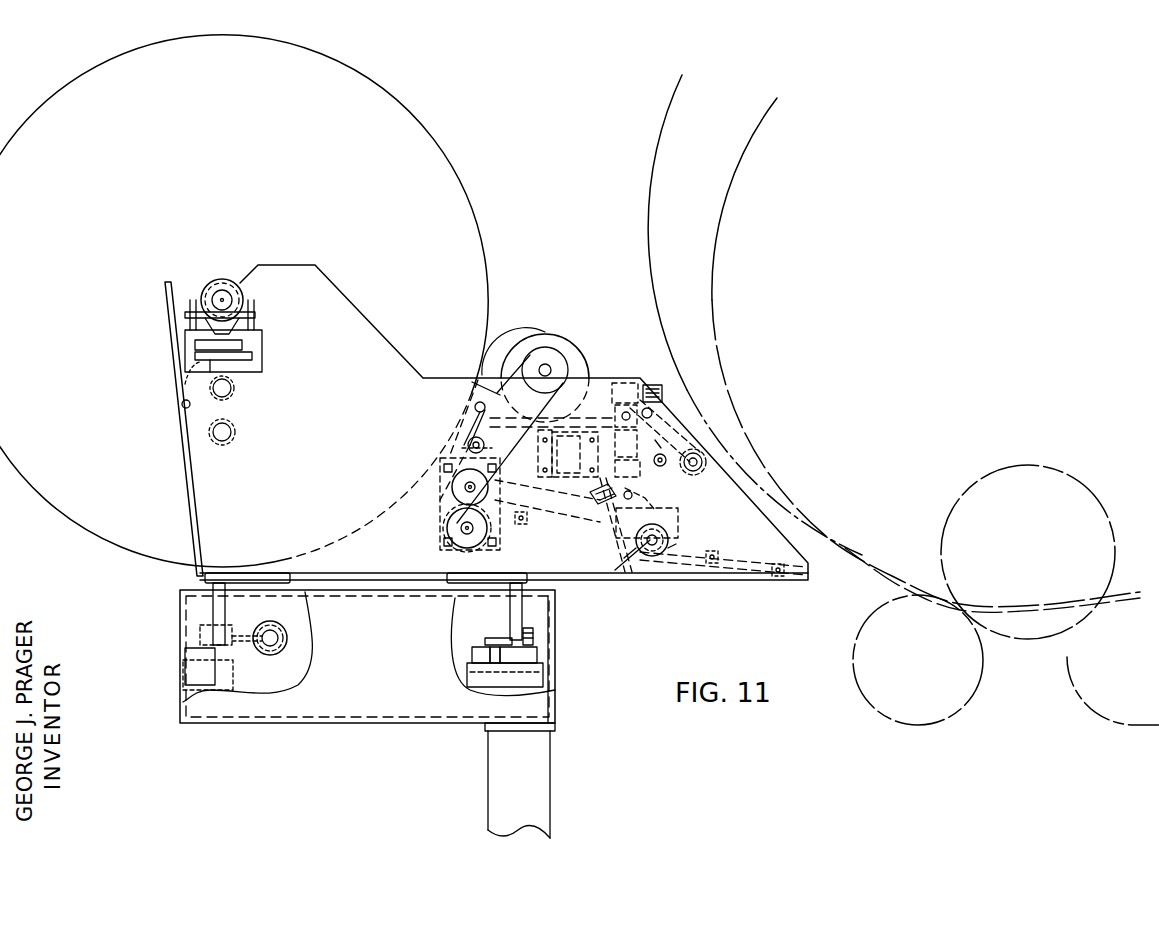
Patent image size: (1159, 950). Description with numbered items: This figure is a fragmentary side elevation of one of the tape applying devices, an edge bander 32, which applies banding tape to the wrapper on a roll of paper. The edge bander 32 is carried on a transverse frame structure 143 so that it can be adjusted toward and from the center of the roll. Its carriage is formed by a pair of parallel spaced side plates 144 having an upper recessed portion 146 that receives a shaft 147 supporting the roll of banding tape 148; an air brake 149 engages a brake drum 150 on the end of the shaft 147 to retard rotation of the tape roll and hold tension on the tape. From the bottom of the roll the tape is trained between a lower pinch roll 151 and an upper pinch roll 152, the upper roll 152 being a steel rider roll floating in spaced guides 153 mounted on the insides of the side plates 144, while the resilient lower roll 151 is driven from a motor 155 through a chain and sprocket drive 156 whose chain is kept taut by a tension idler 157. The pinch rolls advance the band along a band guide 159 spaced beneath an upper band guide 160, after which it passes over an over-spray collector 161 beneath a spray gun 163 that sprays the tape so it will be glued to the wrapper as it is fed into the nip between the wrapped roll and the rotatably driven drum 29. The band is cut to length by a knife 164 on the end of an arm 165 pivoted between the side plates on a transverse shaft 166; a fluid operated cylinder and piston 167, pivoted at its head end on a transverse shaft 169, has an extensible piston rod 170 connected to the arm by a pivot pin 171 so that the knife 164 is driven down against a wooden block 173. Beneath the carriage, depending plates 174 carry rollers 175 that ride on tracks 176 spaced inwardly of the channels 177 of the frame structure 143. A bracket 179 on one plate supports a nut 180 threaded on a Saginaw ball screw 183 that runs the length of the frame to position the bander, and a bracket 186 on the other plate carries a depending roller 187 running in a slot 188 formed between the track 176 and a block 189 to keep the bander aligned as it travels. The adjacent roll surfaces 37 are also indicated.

The rotatably driven drum 29 is at (866, 690).
The edge bander 32 is at (173, 416).
The web roll 37 is at (653, 150).
The transverse frame structure 143 is at (180, 636).
The side plates 144 is at (368, 325).
The upper recessed portion 146 is at (242, 282).
The shaft 147 is at (209, 282).
The roll of banding tape 148 is at (25, 129).
The air brake 149 is at (257, 314).
The brake drum 150 is at (225, 280).
The lower pinch roll 151 is at (445, 535).
The upper pinch roll 152 is at (463, 442).
The guides 153 is at (440, 487).
The motor 155 is at (550, 335).
The chain and sprocket drive 156 is at (473, 380).
The tension idler 157 is at (465, 430).
The band guide 159 is at (540, 520).
The upper band guide 160 is at (544, 522).
The over-spray collector 161 is at (657, 582).
The spray gun 163 is at (695, 432).
The knife 164 is at (614, 576).
The arm 165 is at (678, 514).
The transverse shaft 166 is at (680, 540).
The fluid operated cylinder and piston 167 is at (620, 474).
The transverse shaft 169 is at (624, 399).
The piston rod 170 is at (635, 492).
The pivot pin 171 is at (650, 530).
The block 173 is at (591, 510).
The plates 174 is at (210, 591).
The rollers 175 is at (200, 626).
The tracks 176 is at (185, 660).
The channels 177 is at (208, 694).
The bracket 179 is at (233, 666).
The nut 180 is at (278, 630).
The Saginaw ball screw 183 is at (278, 638).
The bracket 186 is at (485, 637).
The roller 187 is at (493, 663).
The slot 188 is at (482, 689).
The block 189 is at (472, 663).